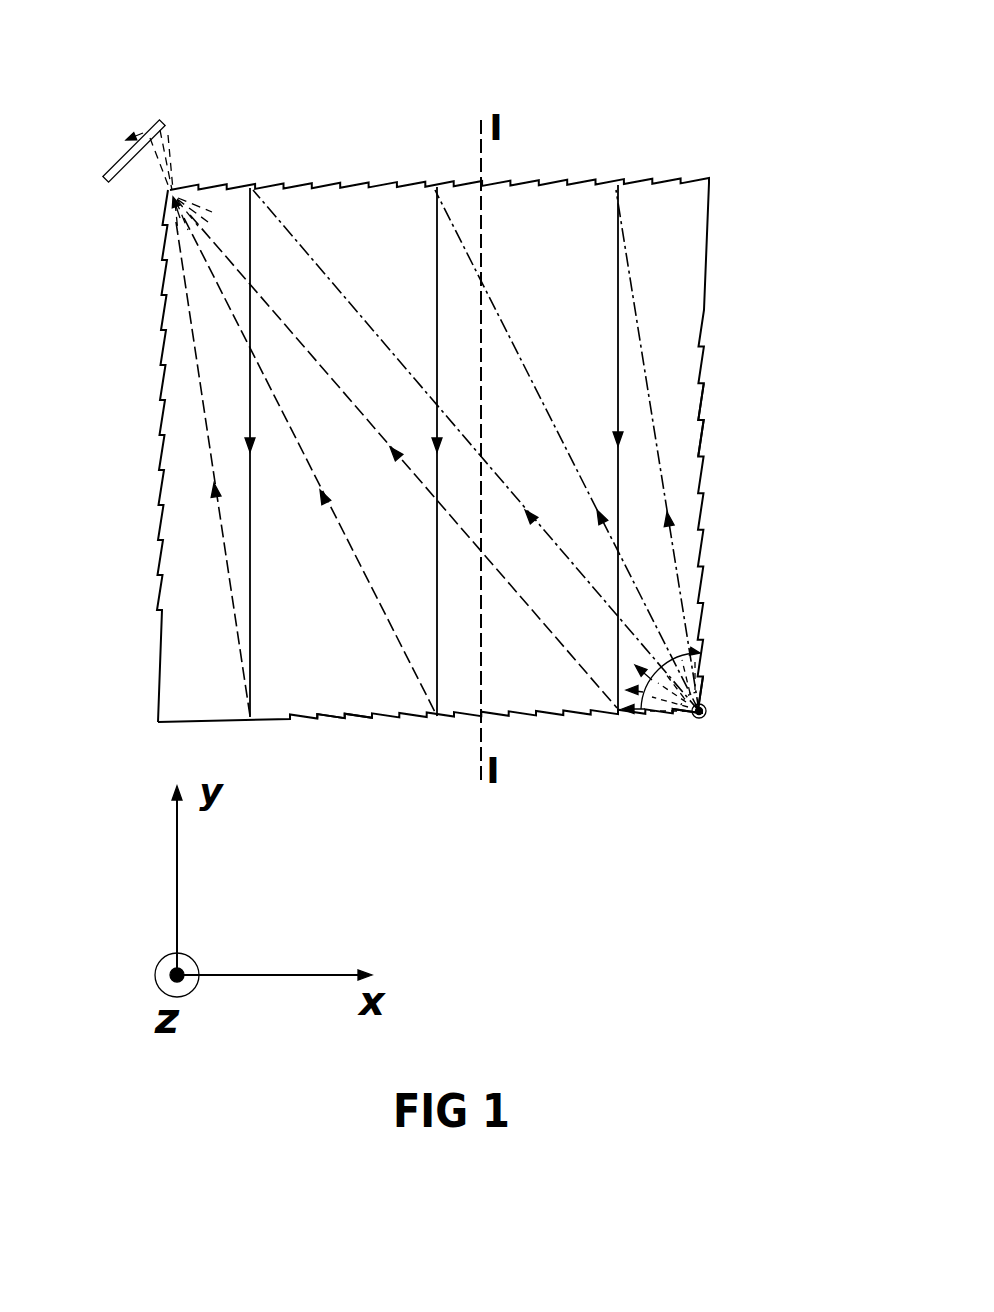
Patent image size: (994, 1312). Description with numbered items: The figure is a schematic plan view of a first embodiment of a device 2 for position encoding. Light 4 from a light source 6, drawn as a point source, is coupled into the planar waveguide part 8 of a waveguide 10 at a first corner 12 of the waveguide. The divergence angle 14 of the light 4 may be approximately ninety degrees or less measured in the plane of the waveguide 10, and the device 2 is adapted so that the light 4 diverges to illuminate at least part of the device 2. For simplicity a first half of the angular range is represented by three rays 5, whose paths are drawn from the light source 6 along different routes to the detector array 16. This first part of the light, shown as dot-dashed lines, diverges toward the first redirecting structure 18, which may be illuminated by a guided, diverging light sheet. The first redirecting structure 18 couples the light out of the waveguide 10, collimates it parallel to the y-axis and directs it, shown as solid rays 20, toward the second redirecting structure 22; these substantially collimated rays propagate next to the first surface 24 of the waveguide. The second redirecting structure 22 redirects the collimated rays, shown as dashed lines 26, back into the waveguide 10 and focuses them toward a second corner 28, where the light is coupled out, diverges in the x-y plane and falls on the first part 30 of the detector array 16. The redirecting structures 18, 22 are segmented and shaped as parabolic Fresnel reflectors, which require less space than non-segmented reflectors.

The device for position encoding 2 is at (697, 91).
The light 4 is at (653, 610).
The rays 5 is at (565, 555).
The light source 6 is at (710, 712).
The planar waveguide part 8 is at (690, 348).
The waveguide 10 is at (690, 423).
The first corner 12 is at (704, 722).
The divergence angle 14 is at (700, 660).
The detector array 16 is at (140, 162).
The first redirecting structure 18 is at (352, 182).
The solid rays 20 is at (619, 312).
The second redirecting structure 22 is at (305, 725).
The first surface 24 is at (354, 683).
The dashed lines 26 is at (205, 405).
The second corner 28 is at (170, 185).
The first part of the detector array 30 is at (158, 124).